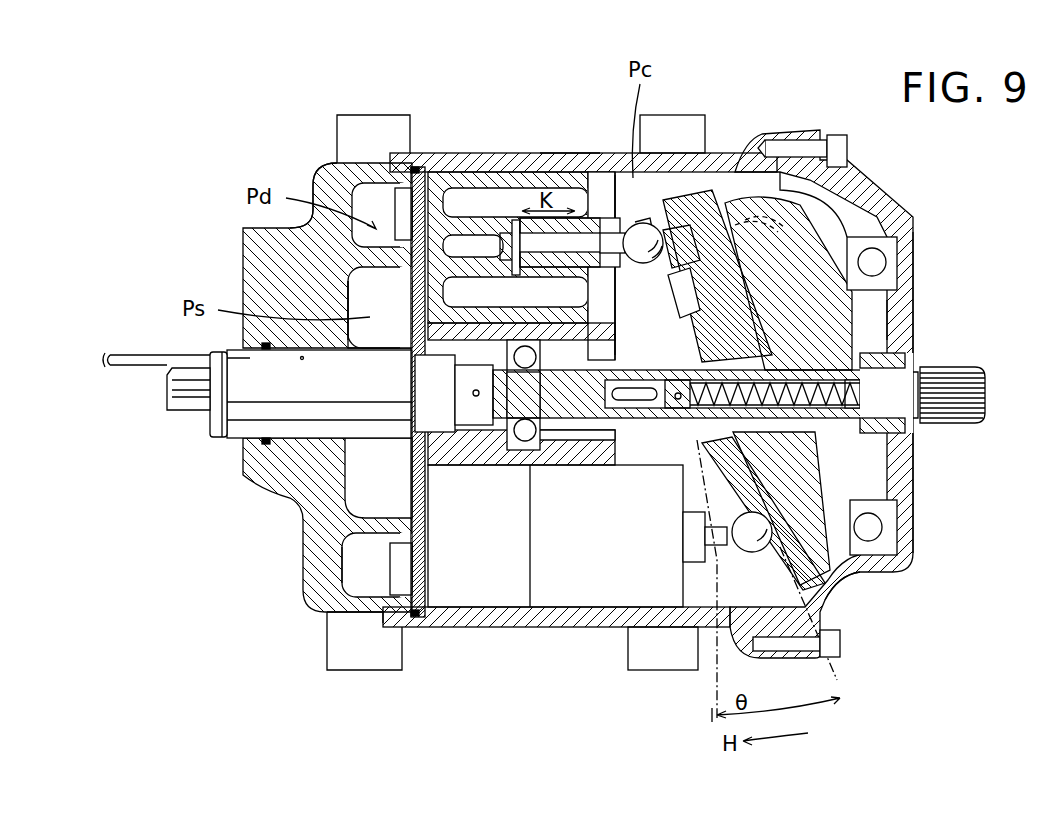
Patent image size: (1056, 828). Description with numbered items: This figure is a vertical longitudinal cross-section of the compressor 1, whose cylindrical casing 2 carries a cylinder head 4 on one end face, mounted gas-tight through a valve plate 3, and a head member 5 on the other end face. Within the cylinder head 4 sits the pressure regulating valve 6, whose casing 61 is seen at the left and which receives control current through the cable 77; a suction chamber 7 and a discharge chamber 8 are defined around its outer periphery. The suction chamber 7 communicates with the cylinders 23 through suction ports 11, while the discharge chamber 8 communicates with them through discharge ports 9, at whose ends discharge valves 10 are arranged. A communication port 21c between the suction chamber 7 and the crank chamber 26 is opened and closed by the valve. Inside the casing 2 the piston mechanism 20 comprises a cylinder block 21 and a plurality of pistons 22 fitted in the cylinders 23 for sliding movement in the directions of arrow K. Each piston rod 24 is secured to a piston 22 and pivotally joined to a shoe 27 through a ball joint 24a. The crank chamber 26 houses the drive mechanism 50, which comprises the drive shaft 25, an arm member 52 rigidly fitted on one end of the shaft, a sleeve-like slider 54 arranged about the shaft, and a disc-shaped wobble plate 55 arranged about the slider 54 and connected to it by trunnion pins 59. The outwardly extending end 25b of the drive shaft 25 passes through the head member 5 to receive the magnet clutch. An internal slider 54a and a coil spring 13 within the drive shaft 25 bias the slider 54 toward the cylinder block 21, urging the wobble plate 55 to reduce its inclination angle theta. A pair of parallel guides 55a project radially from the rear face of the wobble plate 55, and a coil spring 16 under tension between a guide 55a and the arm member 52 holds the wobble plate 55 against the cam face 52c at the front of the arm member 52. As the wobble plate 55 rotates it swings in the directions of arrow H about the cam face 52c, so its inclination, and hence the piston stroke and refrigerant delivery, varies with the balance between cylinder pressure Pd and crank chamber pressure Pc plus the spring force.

The compressor 1 is at (527, 152).
The cylindrical casing 2 is at (565, 172).
The valve plate 3 is at (418, 175).
The cylinder head 4 is at (282, 470).
The head member 5 is at (840, 183).
The pressure regulating valve 6 is at (250, 410).
The suction chamber 7 is at (355, 280).
The discharge chamber 8 is at (358, 198).
The discharge ports 9 is at (412, 170).
The discharge valves 10 is at (396, 210).
The suction ports 11 is at (412, 288).
The coil spring 13 is at (770, 380).
The coil spring 16 is at (788, 391).
The piston mechanism 20 is at (472, 600).
The cylinder block 21 is at (475, 450).
The communication port 21c is at (540, 400).
The pistons 22 is at (472, 178).
The cylinders 23 is at (605, 180).
The piston rods 24 is at (562, 252).
The ball joints 24a is at (740, 545).
The drive shaft 25 is at (905, 360).
The outwardly extending end 25b is at (942, 413).
The crank chamber 26 is at (658, 180).
The shoes 27 is at (850, 560).
The drive mechanism 50 is at (843, 592).
The arm member 52 is at (827, 235).
The cam face 52c is at (905, 315).
The slider 54 is at (640, 412).
The internal slider 54a is at (678, 410).
The wobble plate 55 is at (790, 600).
The parallel guides 55a is at (713, 185).
The trunnion pins 59 is at (741, 579).
The casing 61 is at (235, 395).
The cable 77 is at (143, 368).